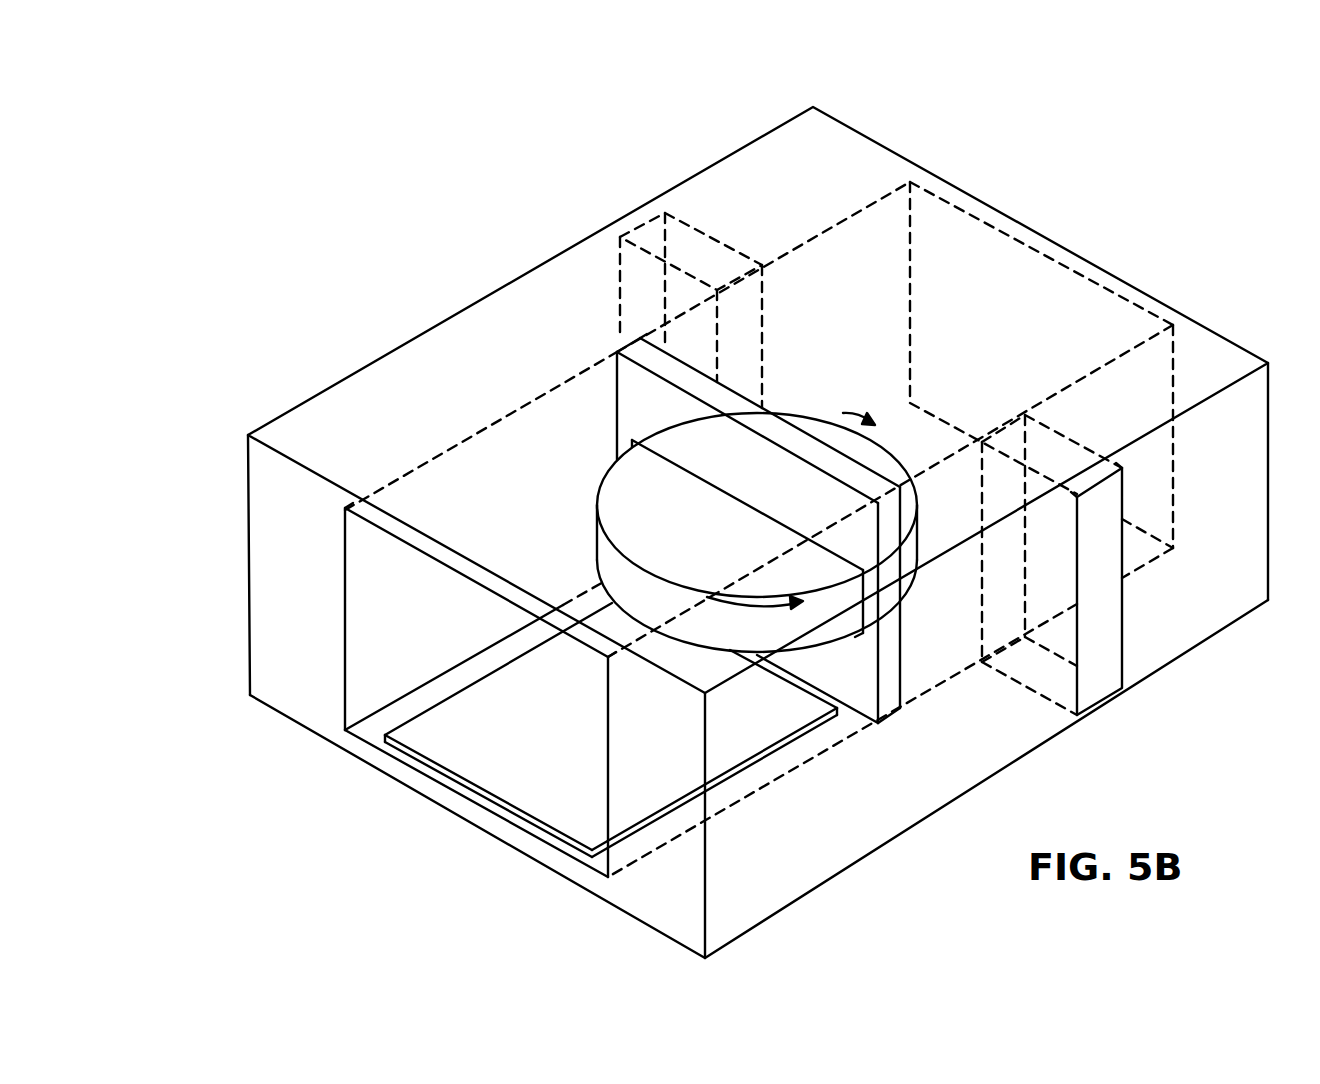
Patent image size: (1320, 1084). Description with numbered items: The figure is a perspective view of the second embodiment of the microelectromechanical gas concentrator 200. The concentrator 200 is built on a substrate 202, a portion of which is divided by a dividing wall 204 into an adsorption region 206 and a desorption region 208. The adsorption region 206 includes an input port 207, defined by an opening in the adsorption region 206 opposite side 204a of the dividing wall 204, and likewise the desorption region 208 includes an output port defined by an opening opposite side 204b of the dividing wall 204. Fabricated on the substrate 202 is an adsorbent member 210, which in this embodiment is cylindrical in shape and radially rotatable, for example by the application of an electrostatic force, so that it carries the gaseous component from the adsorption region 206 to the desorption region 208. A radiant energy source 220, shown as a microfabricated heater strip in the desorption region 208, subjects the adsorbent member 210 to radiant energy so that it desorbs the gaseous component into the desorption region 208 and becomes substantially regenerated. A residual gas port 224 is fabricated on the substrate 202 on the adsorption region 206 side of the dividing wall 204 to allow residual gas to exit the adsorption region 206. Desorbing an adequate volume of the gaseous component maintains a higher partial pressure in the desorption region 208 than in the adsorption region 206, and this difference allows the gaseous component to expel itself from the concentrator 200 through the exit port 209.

The microelectromechanical gas concentrator 200 is at (456, 164).
The substrate 202 is at (370, 403).
The dividing wall 204 is at (821, 572).
The side of the dividing wall 204a is at (902, 672).
The side of the dividing wall 204b is at (855, 692).
The adsorption region 206 is at (933, 323).
The input port 207 is at (1002, 238).
The desorption region 208 is at (466, 500).
The exit port 209 is at (377, 638).
The adsorbent member 210 is at (632, 480).
The radiant energy source 220 is at (508, 782).
The residual gas port 224 is at (643, 237).